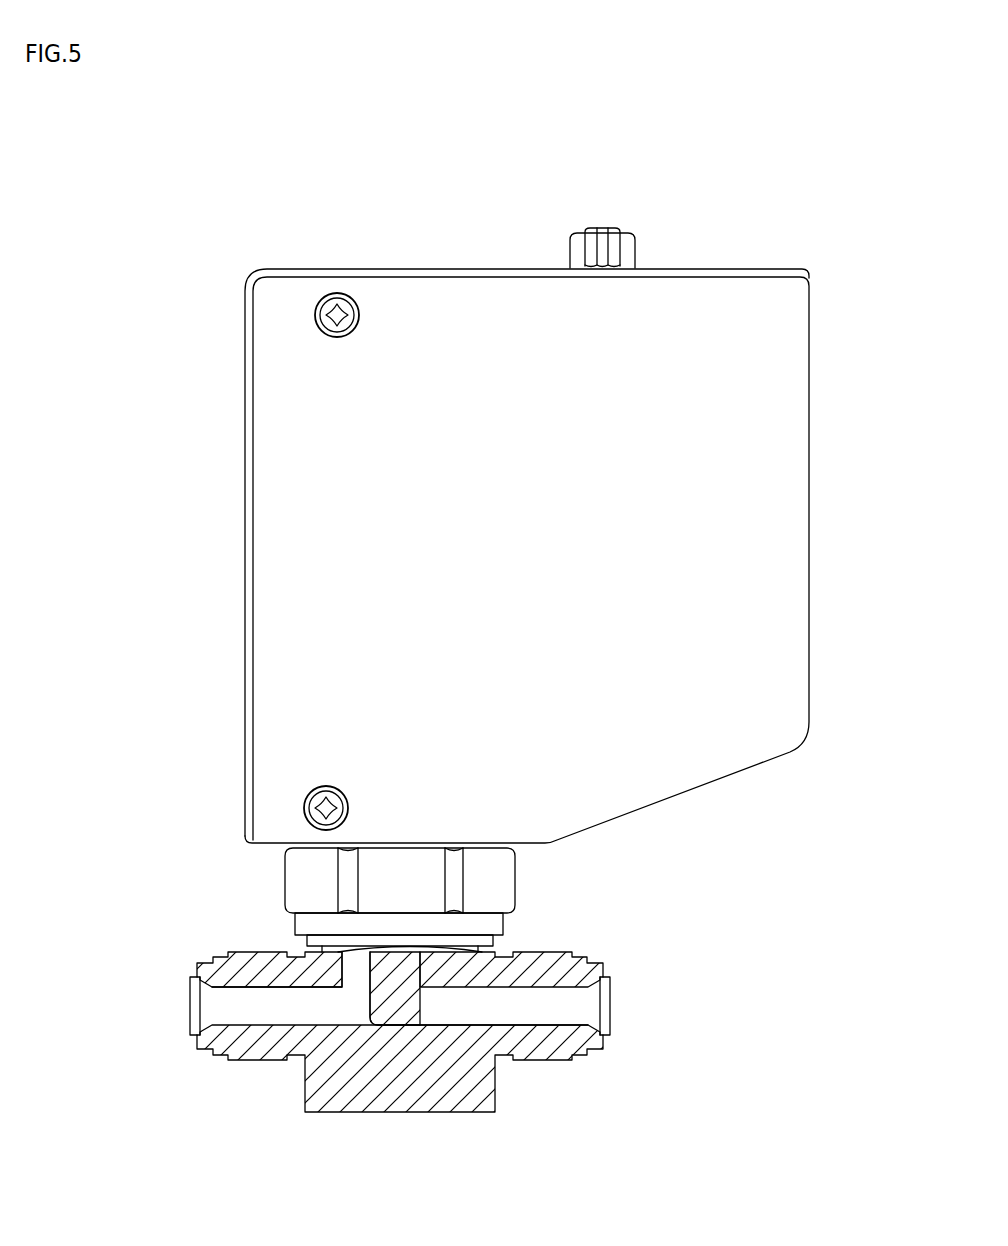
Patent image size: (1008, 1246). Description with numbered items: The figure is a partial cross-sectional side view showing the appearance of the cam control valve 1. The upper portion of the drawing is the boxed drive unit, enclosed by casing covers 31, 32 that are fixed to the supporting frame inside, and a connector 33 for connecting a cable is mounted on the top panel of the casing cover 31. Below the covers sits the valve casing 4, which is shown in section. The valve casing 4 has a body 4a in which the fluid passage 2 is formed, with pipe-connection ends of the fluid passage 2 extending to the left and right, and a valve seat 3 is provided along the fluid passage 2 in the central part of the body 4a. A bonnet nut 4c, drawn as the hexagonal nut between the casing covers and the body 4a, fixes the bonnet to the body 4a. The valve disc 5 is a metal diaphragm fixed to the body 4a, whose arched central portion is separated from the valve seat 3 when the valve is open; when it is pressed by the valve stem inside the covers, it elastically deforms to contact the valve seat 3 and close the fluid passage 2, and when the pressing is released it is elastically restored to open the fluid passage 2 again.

The cam control valve 1 is at (737, 217).
The casing cover 31 is at (377, 268).
The casing cover 32 is at (763, 513).
The connector 33 is at (575, 240).
The valve casing 4 is at (628, 953).
The body 4a is at (482, 1087).
The bonnet nut 4c is at (503, 892).
The fluid passage 2 is at (228, 1007).
The valve seat 3 is at (381, 953).
The valve disc 5 is at (402, 951).